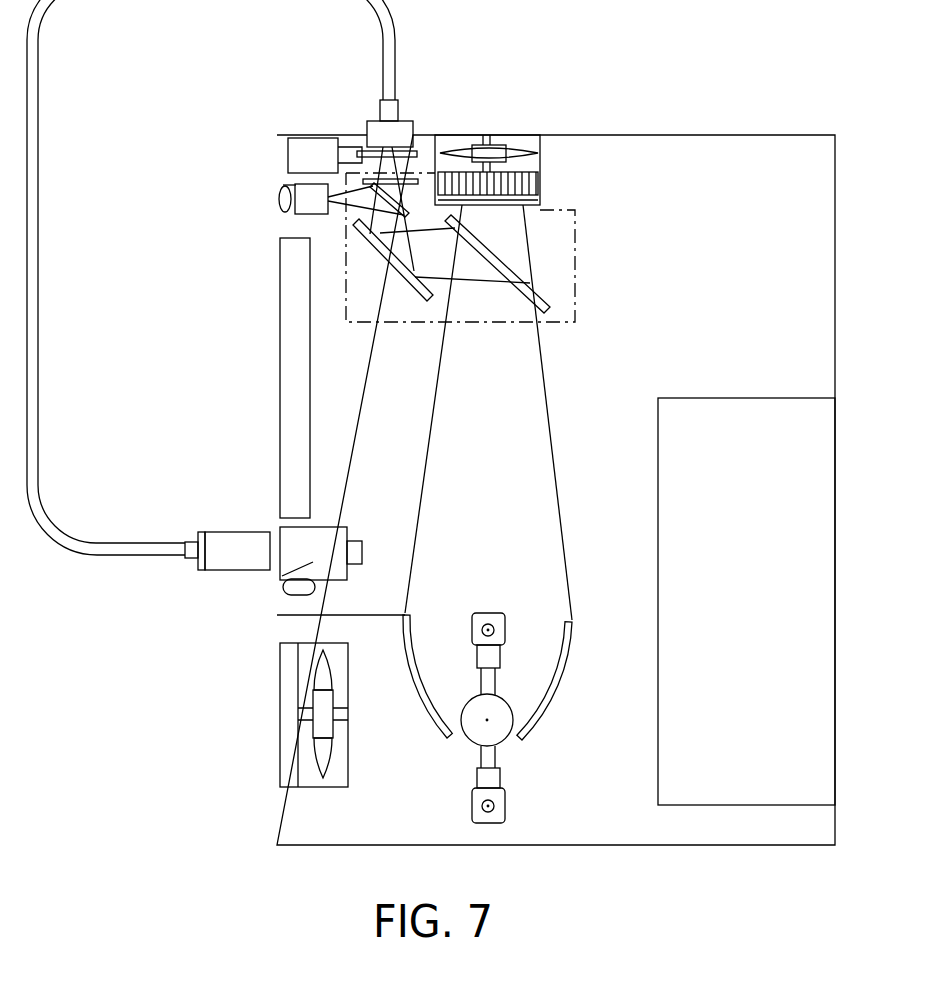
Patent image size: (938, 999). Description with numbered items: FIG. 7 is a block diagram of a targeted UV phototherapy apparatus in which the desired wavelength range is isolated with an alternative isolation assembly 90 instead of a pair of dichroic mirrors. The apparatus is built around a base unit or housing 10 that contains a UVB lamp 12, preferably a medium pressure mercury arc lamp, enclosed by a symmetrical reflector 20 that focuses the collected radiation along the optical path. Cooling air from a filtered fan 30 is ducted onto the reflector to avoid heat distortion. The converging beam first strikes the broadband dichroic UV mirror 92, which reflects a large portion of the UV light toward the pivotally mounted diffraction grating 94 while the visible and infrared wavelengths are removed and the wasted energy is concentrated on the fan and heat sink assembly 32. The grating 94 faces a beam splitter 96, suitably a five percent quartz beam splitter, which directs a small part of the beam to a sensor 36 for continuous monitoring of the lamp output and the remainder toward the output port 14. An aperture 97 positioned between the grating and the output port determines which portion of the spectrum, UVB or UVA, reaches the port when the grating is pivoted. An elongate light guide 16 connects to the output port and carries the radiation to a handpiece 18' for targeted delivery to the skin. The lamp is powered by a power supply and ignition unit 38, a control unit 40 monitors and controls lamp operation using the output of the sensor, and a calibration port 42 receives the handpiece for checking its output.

The housing 10 is at (718, 848).
The UVB lamp 12 is at (497, 755).
The output port 14 is at (368, 122).
The light guide 16 is at (82, 552).
The handpiece 18' is at (216, 587).
The symmetrical reflector 20 is at (428, 723).
The filtered fan 30 is at (281, 750).
The fan and heat sink assembly 32 is at (523, 135).
The sensor 36 is at (303, 210).
The power supply and ignition unit 38 is at (667, 512).
The control unit 40 is at (282, 305).
The calibration port 42 is at (325, 525).
The isolation assembly 90 is at (575, 222).
The broadband dichroic UV mirror 92 is at (530, 282).
The diffraction grating 94 is at (417, 295).
The beam splitter 96 is at (404, 216).
The aperture 97 is at (416, 172).